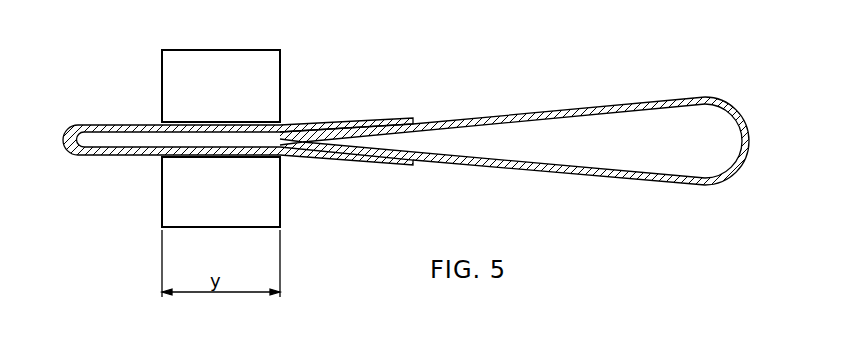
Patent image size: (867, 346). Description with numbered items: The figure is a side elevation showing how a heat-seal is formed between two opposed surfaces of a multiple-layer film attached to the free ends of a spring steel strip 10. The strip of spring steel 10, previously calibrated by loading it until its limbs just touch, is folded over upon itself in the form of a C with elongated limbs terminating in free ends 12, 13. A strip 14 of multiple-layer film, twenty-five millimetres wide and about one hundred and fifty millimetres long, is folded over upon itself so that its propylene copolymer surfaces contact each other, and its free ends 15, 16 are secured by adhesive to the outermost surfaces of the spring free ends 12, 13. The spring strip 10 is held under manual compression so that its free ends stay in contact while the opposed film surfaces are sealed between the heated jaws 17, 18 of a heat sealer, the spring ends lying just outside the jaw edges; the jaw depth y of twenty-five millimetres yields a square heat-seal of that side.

The spring steel strip 10 is at (688, 97).
The free end of spring strip 12 is at (470, 117).
The free end of spring strip 13 is at (503, 164).
The strip of multiple-layer film 14 is at (341, 125).
The free end of film strip 15 is at (392, 120).
The free end of film strip 16 is at (383, 163).
The heated jaw 17 is at (178, 93).
The heated jaw 18 is at (175, 201).